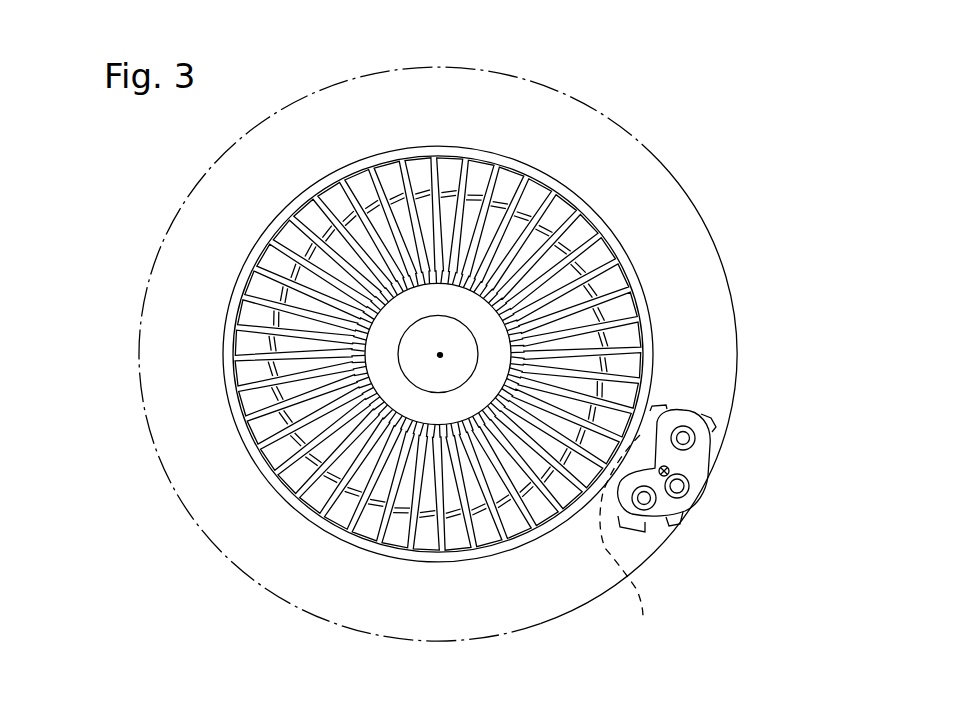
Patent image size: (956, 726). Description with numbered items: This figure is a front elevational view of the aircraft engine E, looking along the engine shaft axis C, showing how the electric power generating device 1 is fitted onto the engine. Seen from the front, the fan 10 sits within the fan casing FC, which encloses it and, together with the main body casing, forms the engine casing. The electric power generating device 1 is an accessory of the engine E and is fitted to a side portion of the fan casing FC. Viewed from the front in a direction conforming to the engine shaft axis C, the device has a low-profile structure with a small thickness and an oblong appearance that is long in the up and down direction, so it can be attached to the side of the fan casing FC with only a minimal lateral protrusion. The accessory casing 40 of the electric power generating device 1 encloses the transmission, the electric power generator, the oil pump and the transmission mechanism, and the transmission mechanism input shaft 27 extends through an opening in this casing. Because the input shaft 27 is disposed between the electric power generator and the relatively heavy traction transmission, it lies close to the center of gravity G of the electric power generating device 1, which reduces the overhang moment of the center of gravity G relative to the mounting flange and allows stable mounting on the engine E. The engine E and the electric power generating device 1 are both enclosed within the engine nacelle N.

The engine nacelle N is at (183, 498).
The aircraft engine E is at (657, 157).
The fan casing FC is at (637, 263).
The fan 10 is at (493, 533).
The engine shaft axis C is at (440, 355).
The electric power generating device 1 is at (711, 411).
The accessory casing 40 is at (690, 460).
The center of gravity G is at (700, 484).
The transmission mechanism input shaft 27 is at (630, 543).